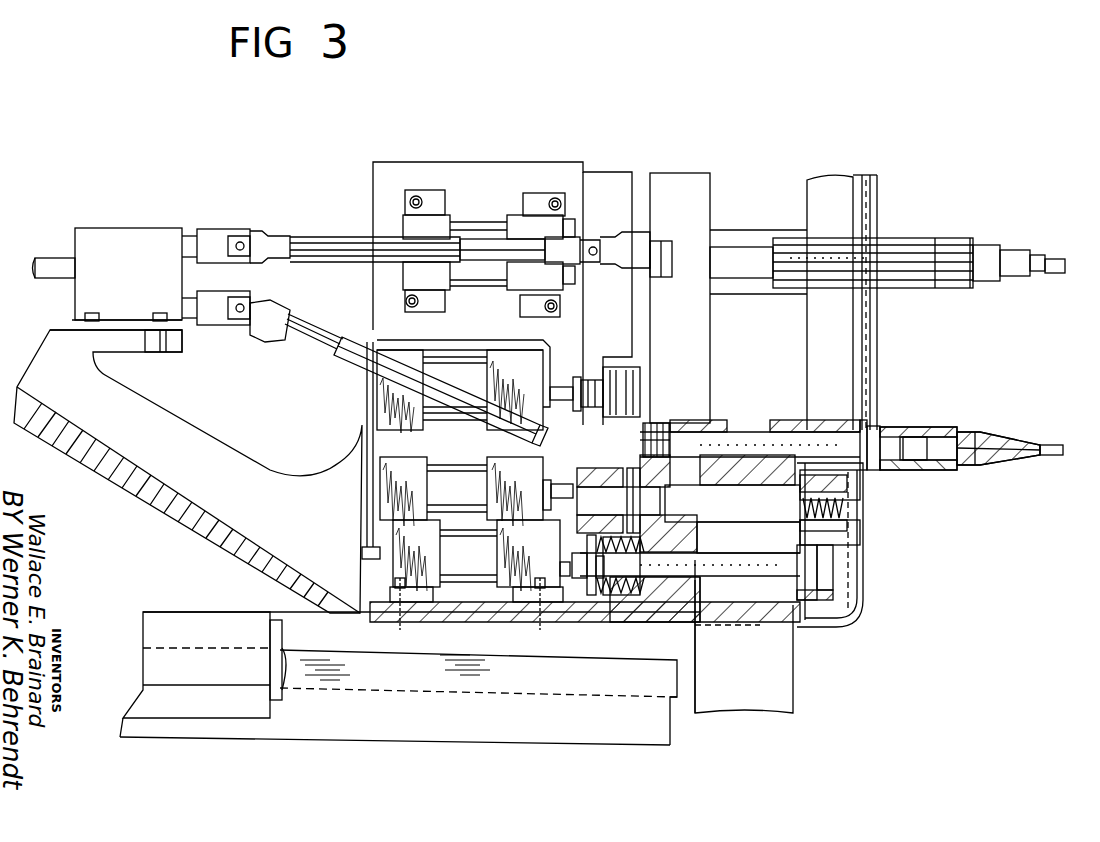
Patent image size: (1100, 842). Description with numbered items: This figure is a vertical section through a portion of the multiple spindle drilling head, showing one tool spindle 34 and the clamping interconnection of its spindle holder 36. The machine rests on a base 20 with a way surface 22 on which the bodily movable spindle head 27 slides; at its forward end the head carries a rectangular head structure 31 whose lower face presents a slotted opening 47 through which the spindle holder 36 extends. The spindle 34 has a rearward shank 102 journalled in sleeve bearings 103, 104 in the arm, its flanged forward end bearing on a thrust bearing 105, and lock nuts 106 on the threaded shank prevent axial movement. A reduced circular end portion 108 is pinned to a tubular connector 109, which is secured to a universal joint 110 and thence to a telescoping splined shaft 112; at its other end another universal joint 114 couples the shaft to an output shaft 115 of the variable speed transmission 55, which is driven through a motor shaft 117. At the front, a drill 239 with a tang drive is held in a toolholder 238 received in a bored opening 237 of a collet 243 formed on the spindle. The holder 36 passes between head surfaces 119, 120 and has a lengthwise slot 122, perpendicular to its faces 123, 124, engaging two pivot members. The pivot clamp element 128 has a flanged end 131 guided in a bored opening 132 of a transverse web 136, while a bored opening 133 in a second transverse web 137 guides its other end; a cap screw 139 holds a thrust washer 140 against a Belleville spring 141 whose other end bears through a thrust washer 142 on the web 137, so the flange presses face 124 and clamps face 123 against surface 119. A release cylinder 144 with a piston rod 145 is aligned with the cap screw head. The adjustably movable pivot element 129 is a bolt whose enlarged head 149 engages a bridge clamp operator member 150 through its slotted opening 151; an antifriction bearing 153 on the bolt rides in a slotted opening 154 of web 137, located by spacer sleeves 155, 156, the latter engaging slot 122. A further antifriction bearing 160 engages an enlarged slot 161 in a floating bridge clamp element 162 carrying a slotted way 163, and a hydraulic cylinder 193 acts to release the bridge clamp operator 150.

The base 20 is at (250, 728).
The way surface 22 is at (422, 660).
The spindle head 27 is at (190, 520).
The head structure 31 is at (668, 622).
The tool spindle 34 is at (893, 430).
The spindle holder 36 is at (752, 470).
The slotted opening 47 is at (773, 635).
The variable speed transmission 55 is at (147, 235).
The spindle shank 102 is at (752, 437).
The sleeve bearing 103 is at (783, 425).
The sleeve bearing 104 is at (745, 420).
The thrust bearing 105 is at (838, 428).
The lock nuts 106 is at (650, 430).
The circular end portion 108 is at (643, 420).
The tubular connector 109 is at (583, 435).
The universal joint 110 is at (545, 433).
The telescoping splined shaft 112 is at (325, 378).
The universal joint 114 is at (245, 335).
The output shaft 115 is at (192, 303).
The motor shaft 117 is at (55, 265).
The head surface 119 is at (700, 620).
The head surface 120 is at (795, 632).
The lengthwise slot 122 is at (762, 705).
The holder face 123 is at (693, 708).
The holder face 124 is at (793, 705).
The pivot clamp element 128 is at (705, 585).
The adjustably movable pivot element 129 is at (690, 515).
The flanged end 131 is at (852, 585).
The bored opening 132 is at (858, 560).
The bored opening 133 is at (737, 616).
The transverse web 136 is at (797, 593).
The transverse web 137 is at (680, 577).
The cap screw 139 is at (585, 598).
The thrust washer 140 is at (580, 580).
The Belleville spring 141 is at (607, 600).
The thrust washer 142 is at (615, 605).
The release cylinder 144 is at (365, 556).
The piston rod 145 is at (560, 560).
The enlarged head 149 is at (560, 497).
The bridge clamp operator member 150 is at (545, 483).
The slotted opening 151 is at (616, 510).
The antifriction bearing 153 is at (690, 490).
The slotted opening 154 is at (640, 520).
The spacer sleeve 155 is at (688, 530).
The spacer sleeve 156 is at (763, 512).
The antifriction bearing 160 is at (770, 498).
The enlarged slot 161 is at (862, 489).
The floating bridge clamp element 162 is at (858, 530).
The slotted way 163 is at (855, 508).
The hydraulic cylinder 193 is at (367, 490).
The bored opening 237 is at (930, 430).
The toolholder 238 is at (928, 458).
The drill 239 is at (1052, 456).
The collet 243 is at (1020, 435).